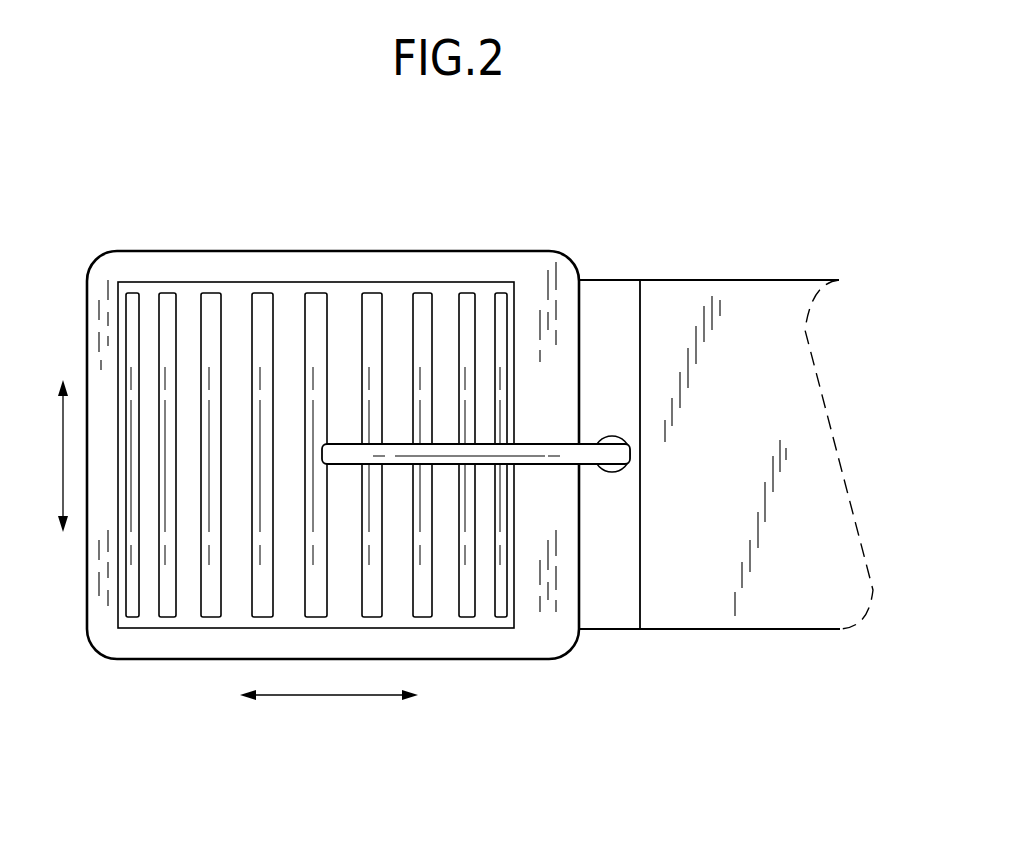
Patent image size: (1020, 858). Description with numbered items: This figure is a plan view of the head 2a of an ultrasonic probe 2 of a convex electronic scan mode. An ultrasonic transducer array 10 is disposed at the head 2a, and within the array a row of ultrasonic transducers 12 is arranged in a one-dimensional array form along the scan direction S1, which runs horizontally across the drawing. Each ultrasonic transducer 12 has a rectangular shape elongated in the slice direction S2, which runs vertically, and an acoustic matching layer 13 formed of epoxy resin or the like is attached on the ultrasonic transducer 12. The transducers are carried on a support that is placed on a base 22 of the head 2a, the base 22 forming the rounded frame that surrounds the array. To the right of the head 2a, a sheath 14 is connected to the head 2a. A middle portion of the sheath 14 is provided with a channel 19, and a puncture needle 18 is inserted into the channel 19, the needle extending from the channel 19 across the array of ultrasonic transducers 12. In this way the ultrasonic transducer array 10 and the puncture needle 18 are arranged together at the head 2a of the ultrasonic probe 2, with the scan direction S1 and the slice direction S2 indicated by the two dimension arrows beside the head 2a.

The ultrasonic probe 2 is at (334, 465).
The head 2a is at (533, 250).
The ultrasonic transducer array 10 is at (316, 453).
The ultrasonic transducer 12 is at (373, 293).
The acoustic matching layer 13 is at (372, 325).
The sheath 14 is at (752, 300).
The puncture needle 18 is at (555, 440).
The channel 19 is at (612, 470).
The base 22 is at (131, 645).
The scan direction S1 is at (329, 711).
The slice direction S2 is at (44, 456).